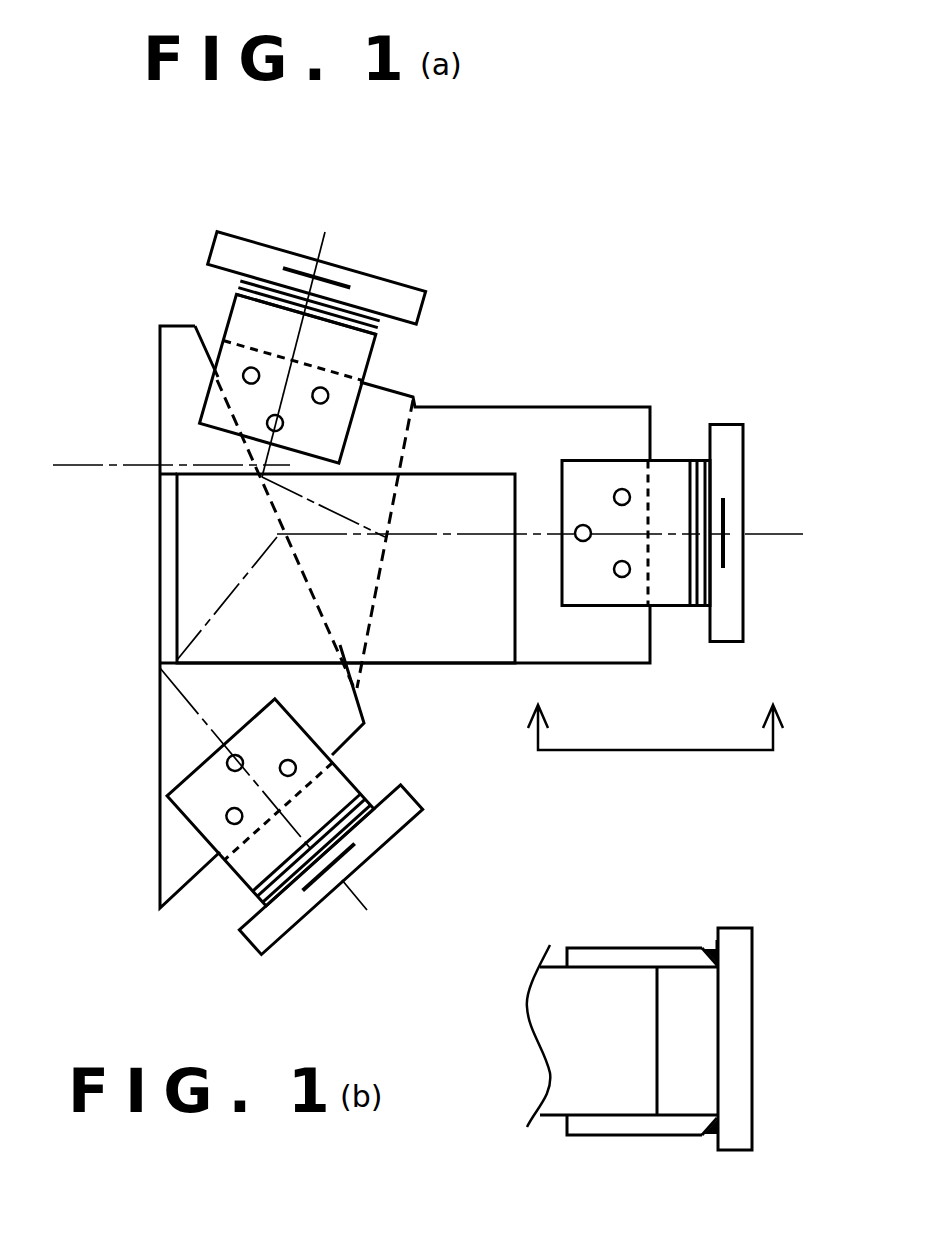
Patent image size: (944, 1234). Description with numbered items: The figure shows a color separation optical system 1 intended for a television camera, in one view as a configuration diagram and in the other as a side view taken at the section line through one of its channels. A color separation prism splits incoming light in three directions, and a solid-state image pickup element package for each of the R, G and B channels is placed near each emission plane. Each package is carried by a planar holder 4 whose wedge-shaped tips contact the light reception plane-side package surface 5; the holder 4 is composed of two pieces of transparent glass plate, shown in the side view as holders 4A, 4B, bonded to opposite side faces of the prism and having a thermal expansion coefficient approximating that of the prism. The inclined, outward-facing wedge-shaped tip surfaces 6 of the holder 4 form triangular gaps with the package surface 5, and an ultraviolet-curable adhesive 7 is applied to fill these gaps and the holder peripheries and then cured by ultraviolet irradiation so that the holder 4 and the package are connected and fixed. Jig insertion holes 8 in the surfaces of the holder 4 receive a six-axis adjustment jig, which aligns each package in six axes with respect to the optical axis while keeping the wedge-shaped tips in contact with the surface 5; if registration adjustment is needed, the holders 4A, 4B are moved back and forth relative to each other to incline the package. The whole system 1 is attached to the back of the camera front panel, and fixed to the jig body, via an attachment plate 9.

The color separation optical system 1 is at (537, 285).
The planar holder 4 is at (247, 318).
The holder 4A is at (567, 947).
The holder 4B is at (597, 1135).
The light reception plane-side package surface 5 is at (716, 937).
The wedge-shaped tip surface 6 is at (690, 958).
The adhesive 7 is at (714, 957).
The jig insertion hole 8 is at (622, 485).
The attachment plate 9 is at (198, 538).